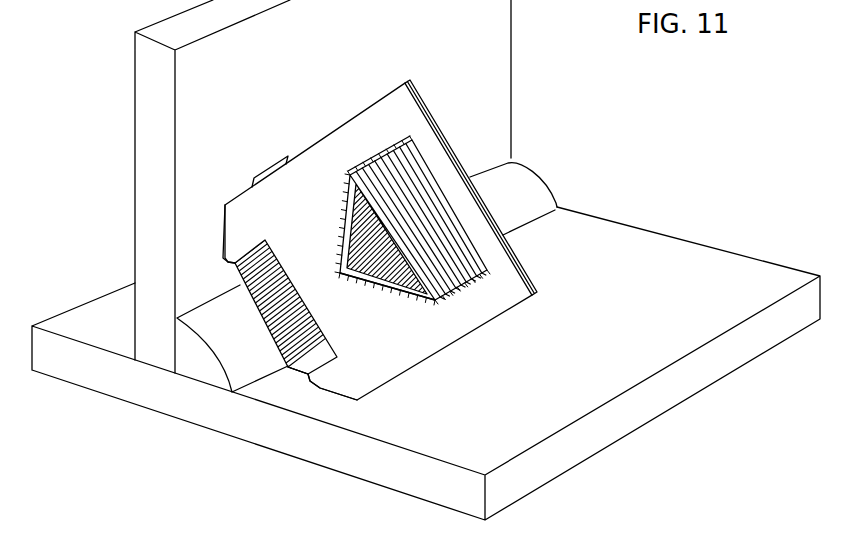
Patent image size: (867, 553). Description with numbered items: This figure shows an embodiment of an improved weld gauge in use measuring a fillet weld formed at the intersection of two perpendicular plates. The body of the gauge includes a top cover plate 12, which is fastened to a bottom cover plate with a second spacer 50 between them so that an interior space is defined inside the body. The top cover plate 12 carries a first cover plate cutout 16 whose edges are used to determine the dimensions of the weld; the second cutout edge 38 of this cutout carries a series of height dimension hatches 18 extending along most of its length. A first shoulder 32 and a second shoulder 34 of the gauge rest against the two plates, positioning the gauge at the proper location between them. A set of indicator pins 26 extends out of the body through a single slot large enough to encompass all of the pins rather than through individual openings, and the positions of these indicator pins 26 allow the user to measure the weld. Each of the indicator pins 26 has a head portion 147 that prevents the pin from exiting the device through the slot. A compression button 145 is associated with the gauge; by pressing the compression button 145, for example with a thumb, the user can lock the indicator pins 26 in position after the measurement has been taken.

The top cover plate 12 is at (383, 367).
The first cover plate cutout 16 is at (400, 294).
The height dimension hatches 18 is at (375, 152).
The indicator pins 26 is at (235, 278).
The first shoulder 32 is at (222, 232).
The second shoulder 34 is at (355, 402).
The second cutout edge 38 is at (462, 281).
The second spacer 50 is at (541, 292).
The compression button 145 is at (263, 173).
The head portions 147 is at (400, 238).